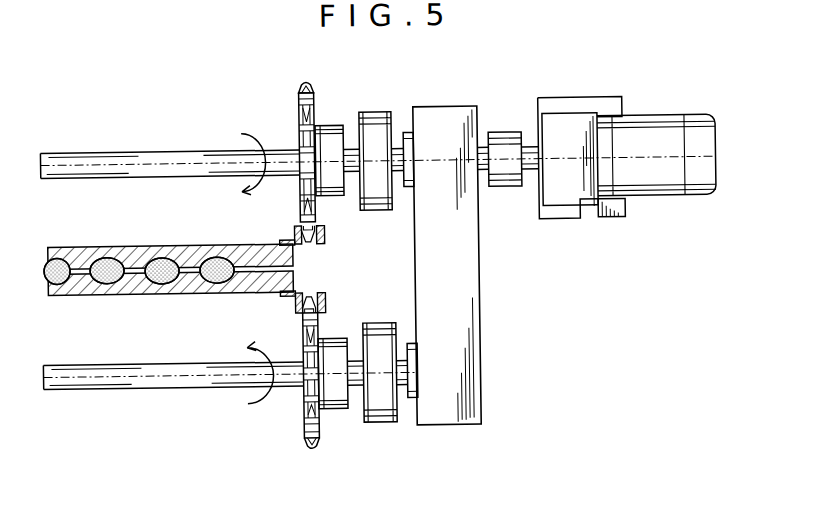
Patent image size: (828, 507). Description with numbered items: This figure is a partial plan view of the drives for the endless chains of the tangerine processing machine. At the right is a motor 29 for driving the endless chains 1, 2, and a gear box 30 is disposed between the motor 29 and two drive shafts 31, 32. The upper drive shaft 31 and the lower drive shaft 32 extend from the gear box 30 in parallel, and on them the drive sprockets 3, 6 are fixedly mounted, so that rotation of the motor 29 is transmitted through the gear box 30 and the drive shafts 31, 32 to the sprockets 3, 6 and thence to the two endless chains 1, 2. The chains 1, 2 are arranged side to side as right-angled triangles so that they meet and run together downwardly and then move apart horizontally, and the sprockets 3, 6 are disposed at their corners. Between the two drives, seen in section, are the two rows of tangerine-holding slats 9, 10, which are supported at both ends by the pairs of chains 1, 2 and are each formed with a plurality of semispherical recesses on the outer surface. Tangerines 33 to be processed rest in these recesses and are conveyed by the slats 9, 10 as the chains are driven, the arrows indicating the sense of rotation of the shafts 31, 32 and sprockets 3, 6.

The endless chain 1 is at (323, 237).
The endless chain 2 is at (323, 297).
The drive sprocket 3 is at (301, 103).
The drive sprocket 6 is at (319, 416).
The tangerine-holding slat 9 is at (188, 250).
The tangerine-holding slat 10 is at (236, 285).
The motor 29 is at (650, 137).
The gear box 30 is at (455, 113).
The drive shaft 31 is at (355, 151).
The drive shaft 32 is at (356, 385).
The tangerines 33 is at (116, 281).